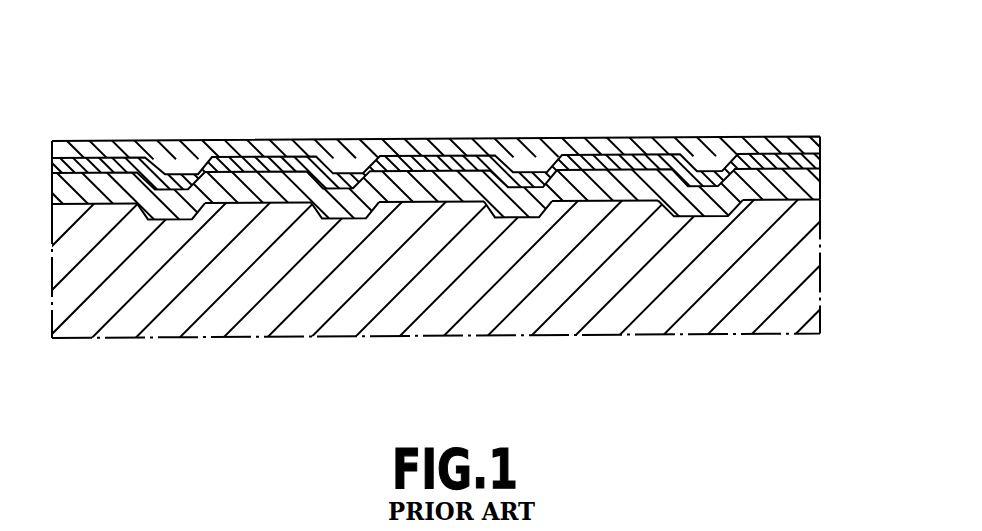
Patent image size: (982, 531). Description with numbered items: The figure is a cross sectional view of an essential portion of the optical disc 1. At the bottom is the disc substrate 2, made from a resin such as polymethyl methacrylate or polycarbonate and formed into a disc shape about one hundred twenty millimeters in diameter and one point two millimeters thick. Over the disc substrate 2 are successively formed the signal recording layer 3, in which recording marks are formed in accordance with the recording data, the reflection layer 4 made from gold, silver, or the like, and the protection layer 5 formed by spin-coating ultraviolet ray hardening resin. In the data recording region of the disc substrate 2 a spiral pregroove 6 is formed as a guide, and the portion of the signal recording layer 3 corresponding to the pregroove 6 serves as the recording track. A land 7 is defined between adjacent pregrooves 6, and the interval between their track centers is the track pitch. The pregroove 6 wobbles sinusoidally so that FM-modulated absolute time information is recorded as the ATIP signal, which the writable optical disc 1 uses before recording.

The optical disc 1 is at (717, 50).
The disc substrate 2 is at (808, 270).
The signal recording layer 3 is at (807, 187).
The reflection layer 4 is at (812, 162).
The protection layer 5 is at (813, 143).
The pregroove 6 is at (155, 196).
The land 7 is at (257, 203).